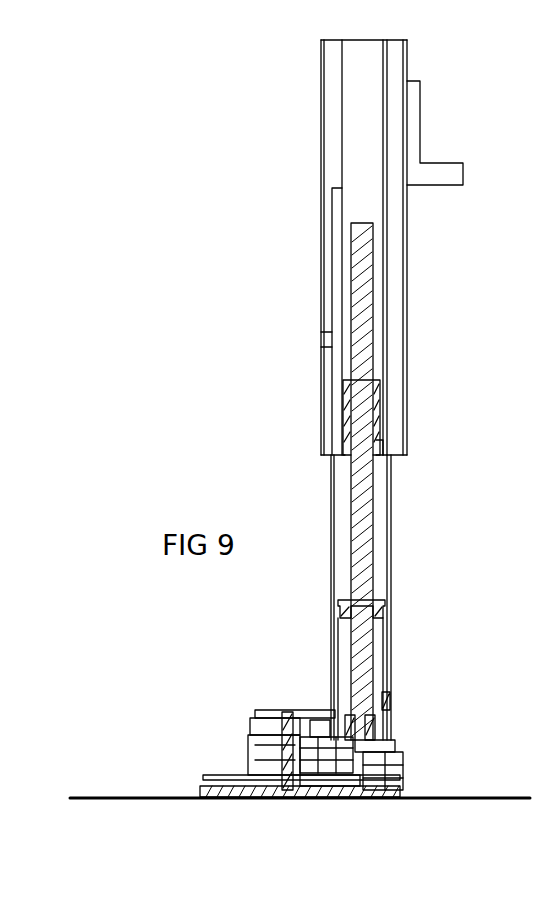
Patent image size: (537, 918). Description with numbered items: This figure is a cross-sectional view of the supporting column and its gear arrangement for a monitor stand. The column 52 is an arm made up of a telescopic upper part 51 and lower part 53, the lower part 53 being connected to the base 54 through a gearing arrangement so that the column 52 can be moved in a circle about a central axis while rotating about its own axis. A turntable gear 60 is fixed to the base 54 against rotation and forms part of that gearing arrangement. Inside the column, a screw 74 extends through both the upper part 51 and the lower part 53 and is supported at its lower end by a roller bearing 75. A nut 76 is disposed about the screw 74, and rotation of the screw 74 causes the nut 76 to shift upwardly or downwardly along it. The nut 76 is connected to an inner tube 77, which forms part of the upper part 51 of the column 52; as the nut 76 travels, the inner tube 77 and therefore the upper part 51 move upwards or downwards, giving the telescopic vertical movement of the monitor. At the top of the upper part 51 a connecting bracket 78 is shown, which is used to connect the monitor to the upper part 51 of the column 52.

The upper part 51 is at (407, 260).
The column 52 is at (278, 350).
The lower part 53 is at (391, 545).
The base 54 is at (92, 797).
The turntable gear 60 is at (200, 788).
The screw 74 is at (368, 478).
The roller bearing 75 is at (381, 612).
The nut 76 is at (388, 450).
The inner tube 77 is at (384, 310).
The connecting bracket 78 is at (413, 105).